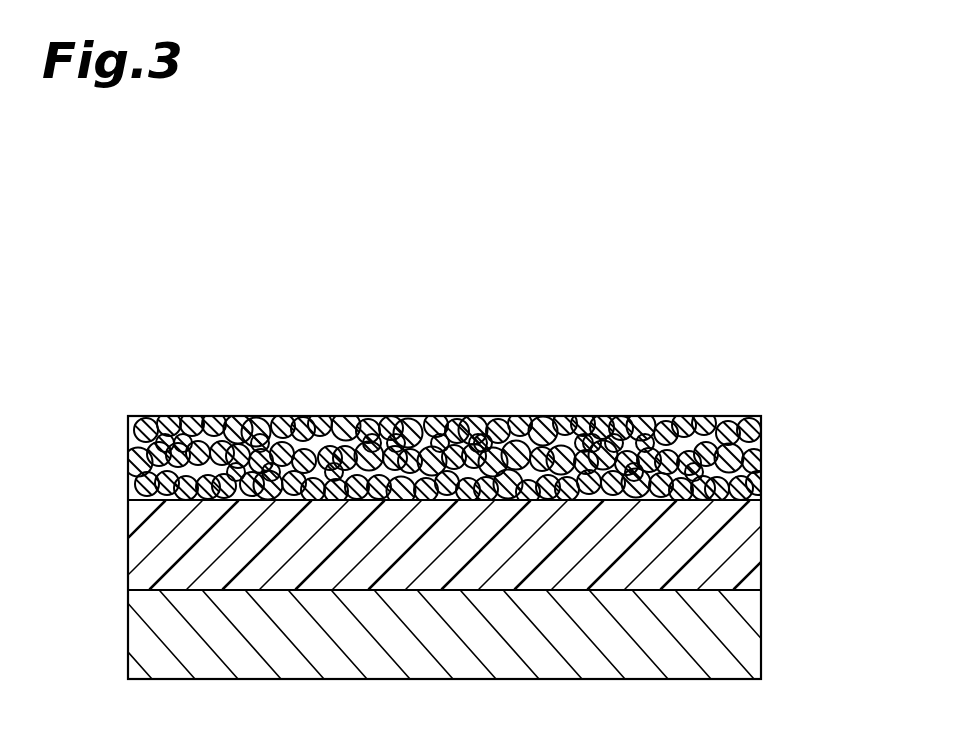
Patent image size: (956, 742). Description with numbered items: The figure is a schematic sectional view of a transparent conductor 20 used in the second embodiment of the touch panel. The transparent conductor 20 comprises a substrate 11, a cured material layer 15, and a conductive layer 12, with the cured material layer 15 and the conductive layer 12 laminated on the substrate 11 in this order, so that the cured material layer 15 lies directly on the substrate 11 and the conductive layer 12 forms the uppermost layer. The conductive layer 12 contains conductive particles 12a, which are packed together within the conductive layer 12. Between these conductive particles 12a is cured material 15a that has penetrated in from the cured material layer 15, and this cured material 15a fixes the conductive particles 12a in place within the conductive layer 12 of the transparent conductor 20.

The transparent conductor 20 is at (781, 279).
The conductive layer 12 is at (119, 414).
The conductive particles 12a is at (764, 418).
The cured material layer 15 is at (119, 501).
The cured material 15a is at (748, 546).
The substrate 11 is at (748, 628).